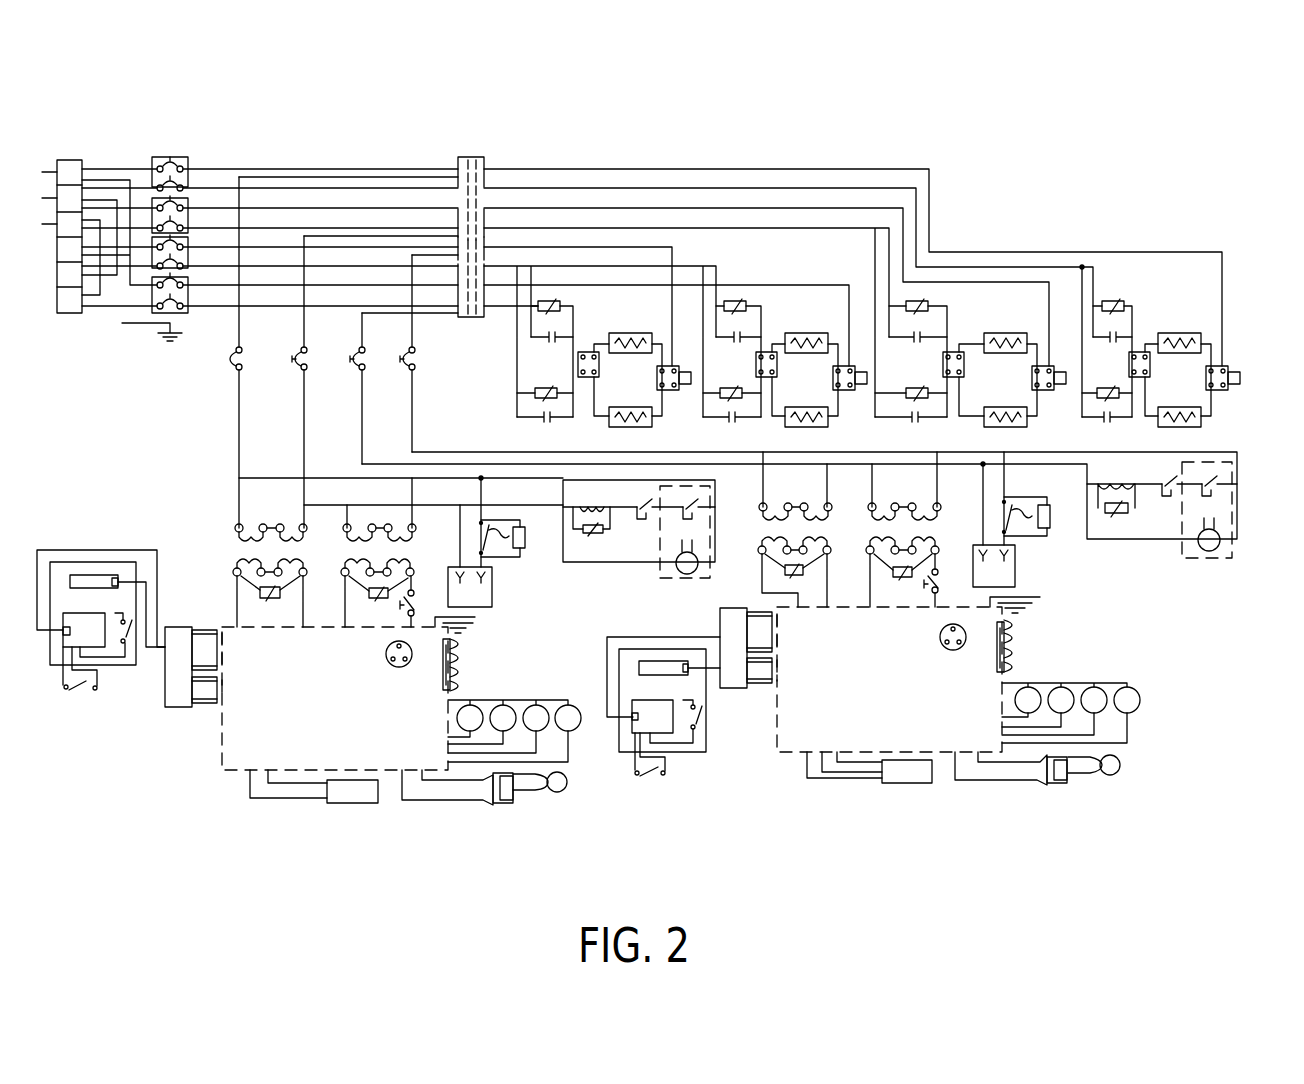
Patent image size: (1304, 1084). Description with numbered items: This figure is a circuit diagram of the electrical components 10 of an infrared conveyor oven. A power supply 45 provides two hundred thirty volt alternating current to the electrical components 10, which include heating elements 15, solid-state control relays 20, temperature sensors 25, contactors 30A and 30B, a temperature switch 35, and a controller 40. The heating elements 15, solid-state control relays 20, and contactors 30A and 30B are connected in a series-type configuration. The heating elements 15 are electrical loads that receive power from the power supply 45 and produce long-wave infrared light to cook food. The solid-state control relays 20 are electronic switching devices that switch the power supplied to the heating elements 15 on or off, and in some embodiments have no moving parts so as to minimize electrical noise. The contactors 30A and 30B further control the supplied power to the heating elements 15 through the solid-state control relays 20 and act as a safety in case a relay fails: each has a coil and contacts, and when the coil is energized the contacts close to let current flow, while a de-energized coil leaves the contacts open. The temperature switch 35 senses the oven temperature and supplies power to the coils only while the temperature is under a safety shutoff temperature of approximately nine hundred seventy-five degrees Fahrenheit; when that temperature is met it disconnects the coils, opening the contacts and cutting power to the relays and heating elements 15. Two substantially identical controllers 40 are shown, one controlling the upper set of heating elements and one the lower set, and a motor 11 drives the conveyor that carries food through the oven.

The electrical components 10 is at (237, 102).
The motor 11 is at (553, 793).
The heating elements 15 is at (630, 333).
The solid-state control relays 20 is at (548, 300).
The temperature sensors 25 is at (435, 670).
The contactor 30A is at (460, 150).
The contactor 30B is at (470, 320).
The temperature switch 35 is at (685, 518).
The controller 40 is at (243, 735).
The power supply 45 is at (70, 158).